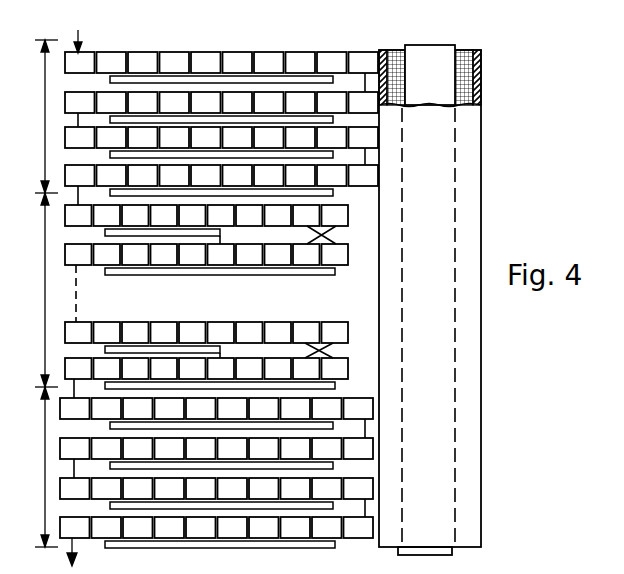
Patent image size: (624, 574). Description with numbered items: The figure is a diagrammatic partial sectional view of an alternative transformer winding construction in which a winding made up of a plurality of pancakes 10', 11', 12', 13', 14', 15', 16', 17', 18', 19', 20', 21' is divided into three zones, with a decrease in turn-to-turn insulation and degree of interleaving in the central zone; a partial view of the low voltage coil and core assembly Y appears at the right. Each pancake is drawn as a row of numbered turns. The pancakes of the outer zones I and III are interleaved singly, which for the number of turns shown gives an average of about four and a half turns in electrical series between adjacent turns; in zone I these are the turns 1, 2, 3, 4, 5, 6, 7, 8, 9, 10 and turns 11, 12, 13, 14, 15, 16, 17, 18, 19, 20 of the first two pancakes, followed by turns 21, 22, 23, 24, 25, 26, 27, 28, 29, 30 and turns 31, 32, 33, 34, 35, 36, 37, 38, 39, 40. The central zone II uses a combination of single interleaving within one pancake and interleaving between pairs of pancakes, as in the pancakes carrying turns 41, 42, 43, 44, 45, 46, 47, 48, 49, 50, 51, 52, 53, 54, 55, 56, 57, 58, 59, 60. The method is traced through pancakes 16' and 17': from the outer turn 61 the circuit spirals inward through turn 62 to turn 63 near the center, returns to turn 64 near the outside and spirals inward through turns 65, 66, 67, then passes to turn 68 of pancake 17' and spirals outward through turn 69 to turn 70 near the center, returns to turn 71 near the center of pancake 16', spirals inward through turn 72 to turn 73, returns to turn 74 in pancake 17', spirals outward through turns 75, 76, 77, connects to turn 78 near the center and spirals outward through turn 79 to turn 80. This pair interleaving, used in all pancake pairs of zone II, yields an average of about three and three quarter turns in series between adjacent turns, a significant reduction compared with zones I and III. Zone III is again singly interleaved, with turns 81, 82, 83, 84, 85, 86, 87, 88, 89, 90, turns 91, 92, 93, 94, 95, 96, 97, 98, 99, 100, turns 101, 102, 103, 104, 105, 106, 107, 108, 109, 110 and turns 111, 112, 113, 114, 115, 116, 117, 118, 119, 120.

The pancake 10' is at (221, 48).
The pancake 11' is at (199, 88).
The pancake 12' is at (196, 139).
The pancake 13' is at (196, 175).
The pancake 14' is at (181, 214).
The pancake 15' is at (181, 251).
The pancake 16' is at (181, 332).
The pancake 17' is at (181, 368).
The pancake 18' is at (192, 407).
The pancake 19' is at (192, 444).
The pancake 20' is at (190, 490).
The pancake 21' is at (190, 527).
The low voltage coil and core assembly Y is at (481, 191).
The zone I is at (46, 116).
The central zone II is at (46, 290).
The zone III is at (45, 467).
The turn 1 is at (80, 62).
The turn 2 is at (143, 62).
The turn 3 is at (206, 62).
The turn 4 is at (269, 62).
The turn 5 is at (332, 62).
The turn 6 is at (112, 62).
The turn 7 is at (175, 62).
The turn 8 is at (238, 62).
The turn 9 is at (301, 62).
The turn 10 is at (364, 62).
The turn 11 is at (364, 102).
The turn 12 is at (301, 102).
The turn 13 is at (238, 102).
The turn 14 is at (175, 102).
The turn 15 is at (112, 102).
The turn 16 is at (332, 102).
The turn 17 is at (269, 102).
The turn 18 is at (206, 102).
The turn 19 is at (143, 102).
The turn 20 is at (80, 102).
The turn 21 is at (80, 137).
The turn 22 is at (143, 137).
The turn 23 is at (206, 137).
The turn 24 is at (269, 137).
The turn 25 is at (332, 137).
The turn 26 is at (112, 137).
The turn 27 is at (175, 137).
The turn 28 is at (238, 137).
The turn 29 is at (301, 137).
The turn 30 is at (364, 137).
The turn 31 is at (364, 175).
The turn 32 is at (301, 175).
The turn 33 is at (238, 175).
The turn 34 is at (175, 175).
The turn 35 is at (112, 175).
The turn 36 is at (332, 175).
The turn 37 is at (269, 175).
The turn 38 is at (206, 175).
The turn 39 is at (143, 175).
The turn 40 is at (80, 175).
The turn 41 is at (78, 215).
The turn 42 is at (135, 215).
The turn 43 is at (192, 215).
The turn 44 is at (107, 215).
The turn 45 is at (164, 215).
The turn 46 is at (249, 215).
The turn 47 is at (306, 215).
The turn 48 is at (335, 254).
The turn 49 is at (278, 254).
The turn 50 is at (221, 254).
The turn 51 is at (221, 215).
The turn 52 is at (278, 215).
The turn 53 is at (335, 215).
The turn 54 is at (306, 254).
The turn 55 is at (249, 254).
The turn 56 is at (164, 254).
The turn 57 is at (107, 254).
The turn 58 is at (192, 254).
The turn 59 is at (135, 254).
The turn 60 is at (78, 254).
The outer turn 61 is at (78, 332).
The turn 62 is at (135, 332).
The turn 63 is at (192, 332).
The turn 64 is at (107, 332).
The turn 65 is at (164, 332).
The turn 66 is at (249, 332).
The turn 67 is at (306, 332).
The turn 68 is at (335, 368).
The turn 69 is at (278, 368).
The turn 70 is at (221, 368).
The turn 71 is at (221, 332).
The turn 72 is at (278, 332).
The turn 73 is at (335, 332).
The turn 74 is at (306, 368).
The turn 75 is at (249, 368).
The turn 76 is at (164, 368).
The turn 77 is at (107, 368).
The turn 78 is at (192, 368).
The turn 79 is at (135, 368).
The turn 80 is at (78, 368).
The turn 81 is at (75, 408).
The turn 82 is at (138, 408).
The turn 83 is at (201, 408).
The turn 84 is at (264, 408).
The turn 85 is at (327, 408).
The turn 86 is at (107, 408).
The turn 87 is at (170, 408).
The turn 88 is at (233, 408).
The turn 89 is at (296, 408).
The turn 90 is at (359, 408).
The turn 91 is at (359, 448).
The turn 92 is at (296, 448).
The turn 93 is at (233, 448).
The turn 94 is at (170, 448).
The turn 95 is at (107, 448).
The turn 96 is at (327, 448).
The turn 97 is at (264, 448).
The turn 98 is at (201, 448).
The turn 99 is at (138, 448).
The turn 100 is at (75, 448).
The turn 101 is at (75, 488).
The turn 102 is at (138, 488).
The turn 103 is at (201, 488).
The turn 104 is at (264, 488).
The turn 105 is at (327, 488).
The turn 106 is at (107, 488).
The turn 107 is at (170, 488).
The turn 108 is at (233, 488).
The turn 109 is at (296, 488).
The turn 110 is at (359, 488).
The turn 111 is at (359, 527).
The turn 112 is at (296, 527).
The turn 113 is at (233, 527).
The turn 114 is at (170, 527).
The turn 115 is at (107, 527).
The turn 116 is at (327, 527).
The turn 117 is at (264, 527).
The turn 118 is at (201, 527).
The turn 119 is at (138, 527).
The turn 120 is at (75, 527).